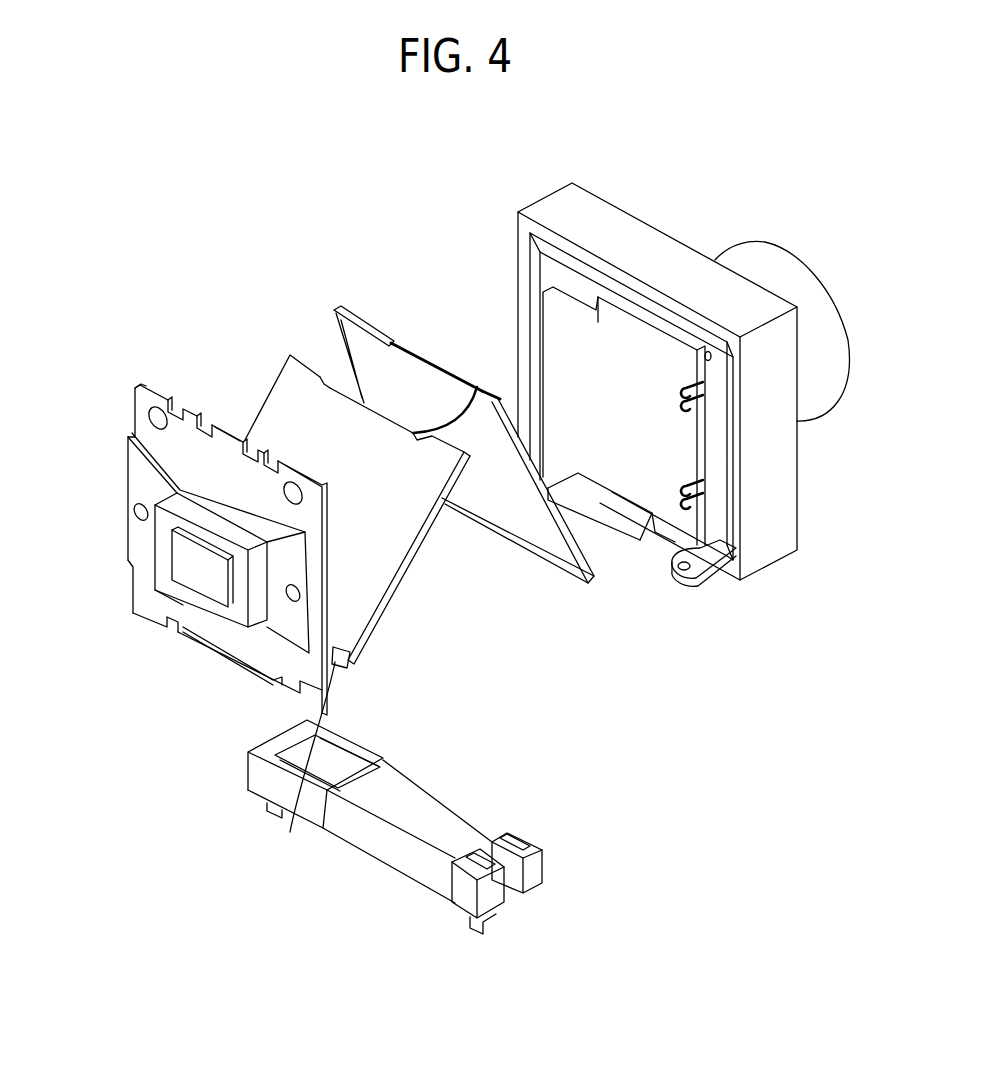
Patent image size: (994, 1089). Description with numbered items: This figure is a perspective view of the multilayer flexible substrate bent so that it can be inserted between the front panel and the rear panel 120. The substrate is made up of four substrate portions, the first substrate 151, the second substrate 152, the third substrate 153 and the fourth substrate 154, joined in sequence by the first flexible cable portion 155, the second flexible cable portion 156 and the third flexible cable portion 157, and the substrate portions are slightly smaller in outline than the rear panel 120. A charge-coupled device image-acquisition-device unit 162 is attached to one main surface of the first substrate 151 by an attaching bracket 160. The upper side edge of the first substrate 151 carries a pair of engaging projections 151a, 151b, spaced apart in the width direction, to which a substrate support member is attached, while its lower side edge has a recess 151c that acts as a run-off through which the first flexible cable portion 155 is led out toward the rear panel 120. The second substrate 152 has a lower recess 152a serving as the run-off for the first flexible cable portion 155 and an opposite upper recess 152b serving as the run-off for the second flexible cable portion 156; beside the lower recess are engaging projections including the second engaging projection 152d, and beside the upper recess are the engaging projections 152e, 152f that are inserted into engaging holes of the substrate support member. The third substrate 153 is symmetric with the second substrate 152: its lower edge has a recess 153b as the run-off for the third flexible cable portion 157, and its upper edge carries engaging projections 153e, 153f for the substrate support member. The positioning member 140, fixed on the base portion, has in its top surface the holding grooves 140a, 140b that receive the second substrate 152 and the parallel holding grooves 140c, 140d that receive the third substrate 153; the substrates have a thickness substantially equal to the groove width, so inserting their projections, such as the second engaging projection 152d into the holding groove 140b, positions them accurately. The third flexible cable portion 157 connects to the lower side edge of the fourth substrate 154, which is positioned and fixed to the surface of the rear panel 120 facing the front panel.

The rear panel 120 is at (772, 547).
The fourth substrate 154 is at (576, 335).
The third flexible cable portion 157 is at (605, 527).
The first substrate 151 is at (147, 408).
The engaging projection 151a is at (197, 407).
The engaging projection 151b is at (233, 383).
The recess 151c is at (180, 630).
The attaching bracket 160 is at (137, 480).
The charge-coupled device (CCD) image-acquisition-device unit 162 is at (180, 560).
The first flexible cable portion 155 is at (219, 652).
The second substrate 152 is at (273, 403).
The recess 152a is at (352, 652).
The recess 152b is at (340, 333).
The second engaging projection 152d is at (297, 764).
The engaging projection 152e is at (305, 376).
The engaging projection 152f is at (485, 455).
The third substrate 153 is at (352, 328).
The recess 153b is at (467, 513).
The engaging projection 153e is at (367, 343).
The engaging projection 153f is at (484, 388).
The second flexible cable portion 156 is at (428, 385).
The positioning member 140 is at (395, 838).
The first holding groove 140a is at (262, 737).
The second holding groove 140b is at (477, 853).
The third holding groove 140c is at (343, 748).
The fourth holding groove 140d is at (512, 840).